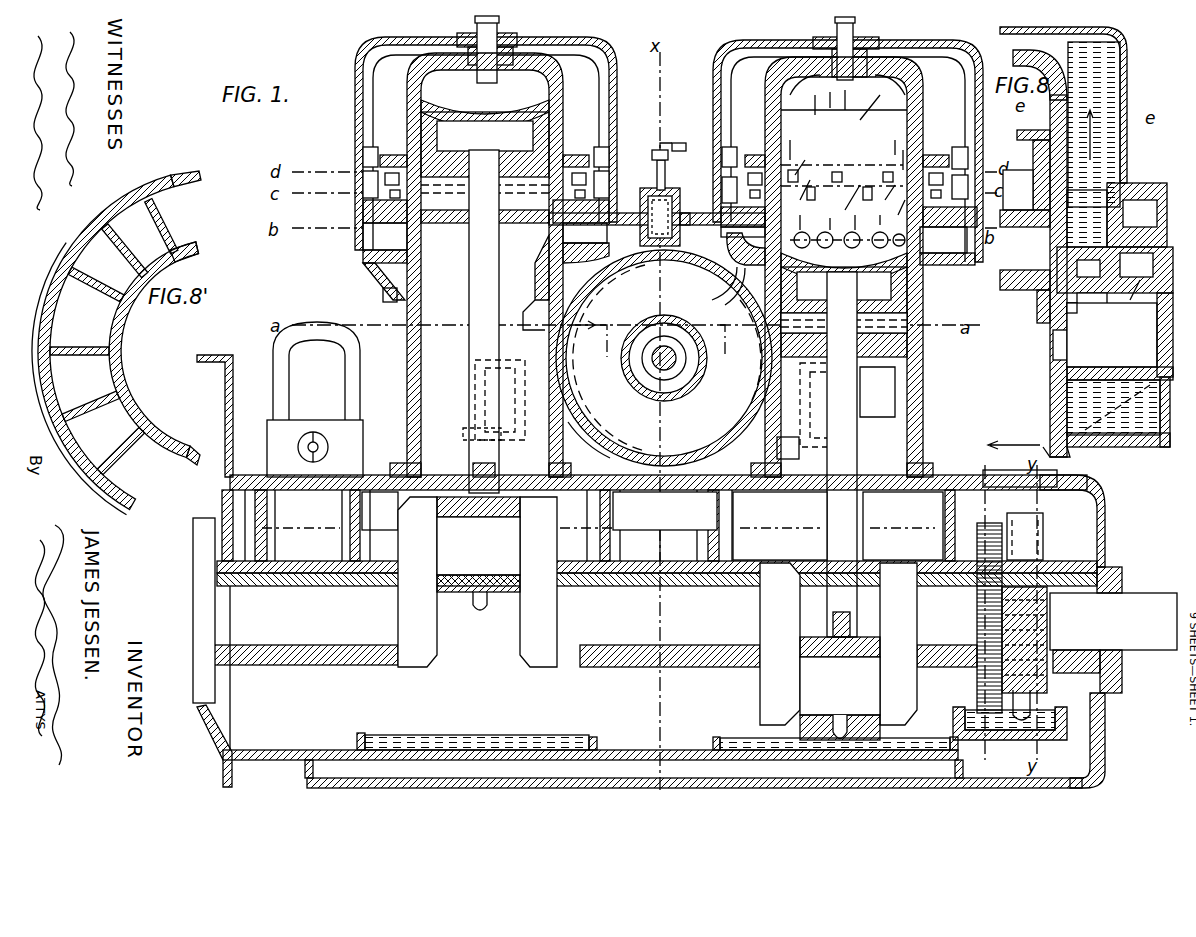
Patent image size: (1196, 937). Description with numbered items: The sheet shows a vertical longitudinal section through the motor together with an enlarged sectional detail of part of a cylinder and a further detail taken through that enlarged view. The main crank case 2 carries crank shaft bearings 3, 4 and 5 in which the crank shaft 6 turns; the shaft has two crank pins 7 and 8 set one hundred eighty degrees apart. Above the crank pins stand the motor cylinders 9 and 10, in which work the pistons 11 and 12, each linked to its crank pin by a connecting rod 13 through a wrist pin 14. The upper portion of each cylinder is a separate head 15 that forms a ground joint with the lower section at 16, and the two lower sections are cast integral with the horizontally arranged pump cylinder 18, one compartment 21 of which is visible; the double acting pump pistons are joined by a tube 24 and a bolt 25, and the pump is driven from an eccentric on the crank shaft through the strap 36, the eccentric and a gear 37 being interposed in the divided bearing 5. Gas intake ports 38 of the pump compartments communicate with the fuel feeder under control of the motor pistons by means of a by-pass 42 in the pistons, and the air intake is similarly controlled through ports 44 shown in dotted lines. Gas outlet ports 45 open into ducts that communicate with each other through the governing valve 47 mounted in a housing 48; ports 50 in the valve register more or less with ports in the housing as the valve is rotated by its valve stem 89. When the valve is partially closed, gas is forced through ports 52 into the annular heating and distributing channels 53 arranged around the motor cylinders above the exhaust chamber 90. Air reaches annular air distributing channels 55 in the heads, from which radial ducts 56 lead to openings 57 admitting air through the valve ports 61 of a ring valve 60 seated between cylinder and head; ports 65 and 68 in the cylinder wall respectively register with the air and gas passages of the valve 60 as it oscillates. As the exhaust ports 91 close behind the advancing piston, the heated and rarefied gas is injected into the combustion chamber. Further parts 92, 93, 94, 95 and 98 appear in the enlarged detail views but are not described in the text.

In FIG. 1, the main crank case 2 is at (1105, 502).
In FIG. 1, the crank shaft bearing 3 is at (312, 665).
In FIG. 1, the crank shaft bearing 4 is at (637, 667).
In FIG. 1, the crank shaft bearing 5 is at (953, 667).
In FIG. 1, the crank shaft 6 is at (538, 680).
In FIG. 1, the crank pin 7 is at (478, 553).
In FIG. 1, the crank pin 8 is at (840, 676).
In FIG. 1, the motor cylinder 9 is at (414, 440).
In FIG. 1, the motor cylinder 10 is at (921, 436).
In FIG. 1, the piston 11 is at (485, 265).
In FIG. 1, the piston 12 is at (877, 392).
In FIG. 8, the piston 12 is at (1047, 330).
In FIG. 1, the connecting rod 13 is at (473, 433).
In FIG. 1, the wrist pin 14 is at (664, 254).
In FIG. 1, the head 15 is at (713, 96).
In FIG. 8, the head 15 is at (1127, 112).
In FIG. 8', the head 15 is at (122, 351).
In FIG. 1, the ground joint 16 is at (880, 232).
In FIG. 8, the ground joint 16 is at (1040, 300).
In FIG. 1, the pump cylinder 18 is at (612, 450).
In FIG. 1, the compartment 21 is at (664, 358).
In FIG. 1, the tube 24 is at (700, 378).
In FIG. 1, the bolt 25 is at (660, 372).
In FIG. 1, the strap 36 is at (1042, 672).
In FIG. 1, the gear 37 is at (994, 722).
In FIG. 1, the gas intake port 38 is at (760, 317).
In FIG. 1, the by-pass 42 is at (535, 302).
In FIG. 1, the port 44 is at (848, 432).
In FIG. 1, the gas outlet port 45 is at (720, 272).
In FIG. 1, the governing valve 47 is at (650, 190).
In FIG. 1, the housing 48 is at (672, 196).
In FIG. 1, the valve port 50 is at (593, 246).
In FIG. 1, the port 52 is at (727, 250).
In FIG. 1, the annular heating and distributing channel 53 is at (610, 152).
In FIG. 8, the annular heating and distributing channel 53 is at (1089, 327).
In FIG. 1, the annular air distributing channel 55 is at (363, 152).
In FIG. 8, the annular air distributing channel 55 is at (1140, 213).
In FIG. 1, the radial duct 56 is at (394, 155).
In FIG. 1, the opening 57 is at (578, 155).
In FIG. 8, the ring valve 60 is at (1052, 272).
In FIG. 8, the valve port 61 is at (1088, 235).
In FIG. 1, the port 65 is at (862, 200).
In FIG. 1, the port 68 is at (842, 172).
In FIG. 8, the port 68 is at (1052, 252).
In FIG. 1, the valve stem 89 is at (666, 154).
In FIG. 1, the exhaust chamber 90 is at (368, 252).
In FIG. 8, the exhaust chamber 90 is at (1112, 335).
In FIG. 1, the exhaust port 91 is at (543, 242).
In FIG. 8, the exhaust port 91 is at (1058, 355).
In FIG. 8', the cell 92 is at (87, 311).
In FIG. 8, the water space 93 is at (1094, 124).
In FIG. 8', the water space 93 is at (103, 420).
In FIG. 8, the valve 94 is at (1137, 251).
In FIG. 8, the passage 95 is at (1145, 300).
In FIG. 8, the pipe 98 is at (1153, 425).